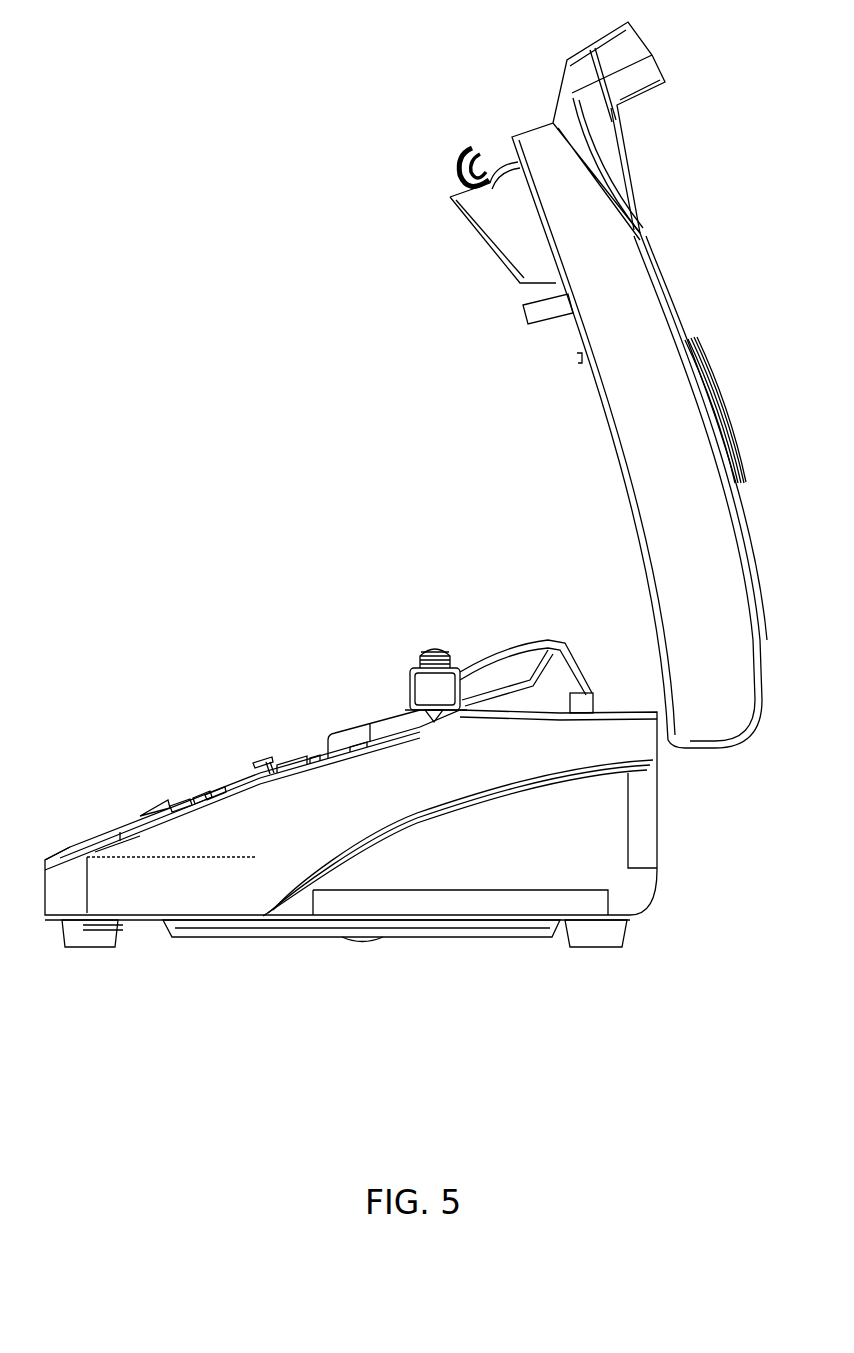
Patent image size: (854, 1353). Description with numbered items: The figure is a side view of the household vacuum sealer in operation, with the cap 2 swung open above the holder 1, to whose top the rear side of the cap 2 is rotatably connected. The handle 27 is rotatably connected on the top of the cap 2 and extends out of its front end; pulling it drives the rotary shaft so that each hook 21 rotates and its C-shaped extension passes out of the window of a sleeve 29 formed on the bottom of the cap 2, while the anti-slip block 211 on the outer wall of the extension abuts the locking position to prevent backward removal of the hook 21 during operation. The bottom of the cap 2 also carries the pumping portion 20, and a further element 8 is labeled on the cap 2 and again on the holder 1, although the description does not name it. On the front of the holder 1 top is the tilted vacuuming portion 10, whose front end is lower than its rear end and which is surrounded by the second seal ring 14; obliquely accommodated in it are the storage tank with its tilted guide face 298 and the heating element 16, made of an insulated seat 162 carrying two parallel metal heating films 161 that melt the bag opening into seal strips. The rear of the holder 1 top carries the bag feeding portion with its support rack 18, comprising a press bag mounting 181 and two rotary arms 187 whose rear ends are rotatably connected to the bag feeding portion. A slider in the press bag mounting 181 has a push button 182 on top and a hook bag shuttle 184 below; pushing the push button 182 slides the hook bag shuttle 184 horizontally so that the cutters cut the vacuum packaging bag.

The holder 1 is at (453, 880).
The cap 2 is at (638, 313).
The hook 8 is at (527, 315).
The vacuuming portion 10 is at (110, 827).
The second seal ring 14 is at (90, 843).
The heating element 16 is at (213, 780).
The support rack 18 is at (408, 700).
The pumping portion 20 is at (577, 355).
The hook 21 is at (458, 183).
The handle 27 is at (650, 73).
The sleeve 29 is at (490, 227).
The metal heating film 161 is at (195, 792).
The insulated seat 162 is at (172, 797).
The press bag mounting 181 is at (415, 690).
The push button 182 is at (432, 648).
The hook bag shuttle 184 is at (435, 715).
The rotary arm 187 is at (507, 665).
The anti-slip block 211 is at (468, 153).
The tilted guide face 298 is at (148, 808).